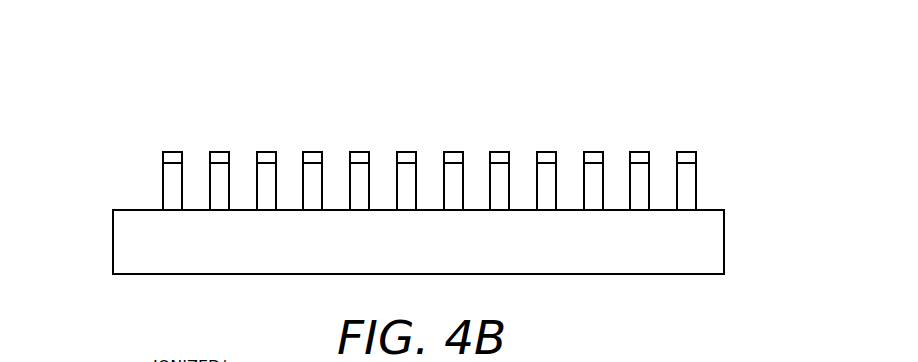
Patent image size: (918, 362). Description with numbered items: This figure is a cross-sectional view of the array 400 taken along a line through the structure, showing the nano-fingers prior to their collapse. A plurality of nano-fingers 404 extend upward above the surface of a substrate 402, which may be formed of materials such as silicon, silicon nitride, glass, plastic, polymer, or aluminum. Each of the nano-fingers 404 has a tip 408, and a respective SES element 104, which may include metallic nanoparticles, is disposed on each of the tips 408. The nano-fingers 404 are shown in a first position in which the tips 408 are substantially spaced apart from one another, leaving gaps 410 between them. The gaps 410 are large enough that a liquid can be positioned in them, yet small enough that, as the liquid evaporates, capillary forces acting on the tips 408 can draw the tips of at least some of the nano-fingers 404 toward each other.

The array 400 is at (108, 48).
The substrate 402 is at (724, 246).
The nano-fingers 404 is at (162, 187).
The SES elements 104 is at (397, 152).
The tips 408 is at (416, 158).
The gaps 410 is at (340, 146).